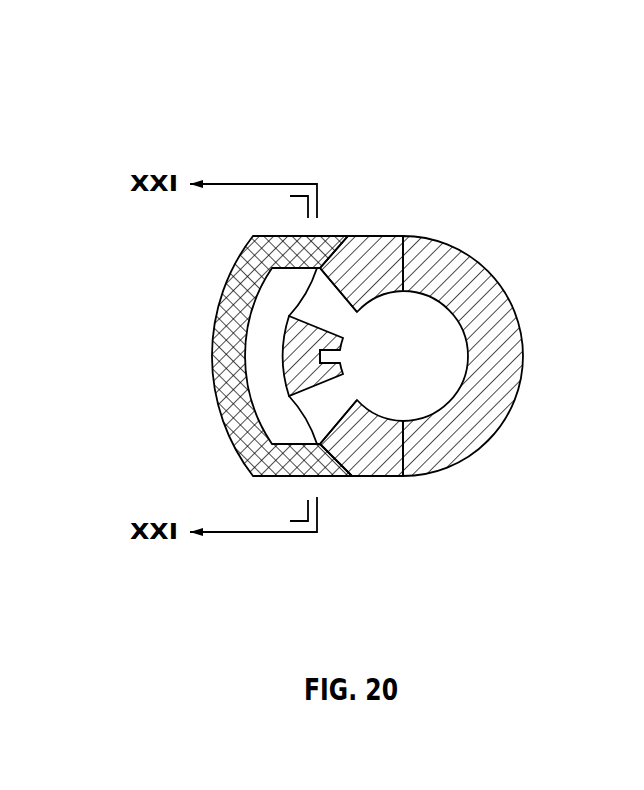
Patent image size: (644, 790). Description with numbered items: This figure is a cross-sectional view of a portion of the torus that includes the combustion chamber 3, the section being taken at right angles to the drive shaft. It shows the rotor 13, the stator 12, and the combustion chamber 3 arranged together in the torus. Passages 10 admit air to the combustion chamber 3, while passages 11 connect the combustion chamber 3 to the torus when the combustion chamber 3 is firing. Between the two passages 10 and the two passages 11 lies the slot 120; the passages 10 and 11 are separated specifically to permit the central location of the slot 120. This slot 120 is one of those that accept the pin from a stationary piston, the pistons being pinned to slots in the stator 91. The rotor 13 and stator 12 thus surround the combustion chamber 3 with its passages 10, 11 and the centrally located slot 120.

The combustion chamber 3 is at (220, 418).
The passages 10 is at (320, 306).
The passages 11 is at (320, 406).
The stator 12 is at (258, 112).
The rotor 13 is at (405, 112).
The stator 91 is at (362, 463).
The slot 120 is at (338, 357).